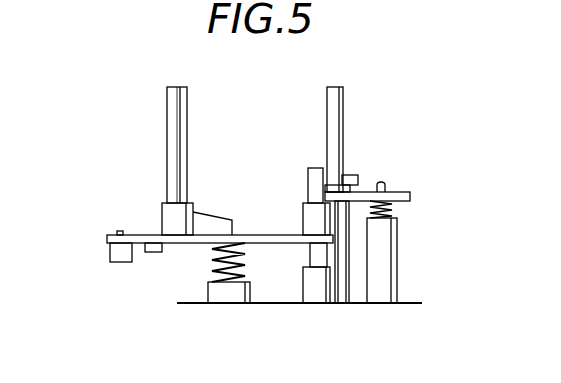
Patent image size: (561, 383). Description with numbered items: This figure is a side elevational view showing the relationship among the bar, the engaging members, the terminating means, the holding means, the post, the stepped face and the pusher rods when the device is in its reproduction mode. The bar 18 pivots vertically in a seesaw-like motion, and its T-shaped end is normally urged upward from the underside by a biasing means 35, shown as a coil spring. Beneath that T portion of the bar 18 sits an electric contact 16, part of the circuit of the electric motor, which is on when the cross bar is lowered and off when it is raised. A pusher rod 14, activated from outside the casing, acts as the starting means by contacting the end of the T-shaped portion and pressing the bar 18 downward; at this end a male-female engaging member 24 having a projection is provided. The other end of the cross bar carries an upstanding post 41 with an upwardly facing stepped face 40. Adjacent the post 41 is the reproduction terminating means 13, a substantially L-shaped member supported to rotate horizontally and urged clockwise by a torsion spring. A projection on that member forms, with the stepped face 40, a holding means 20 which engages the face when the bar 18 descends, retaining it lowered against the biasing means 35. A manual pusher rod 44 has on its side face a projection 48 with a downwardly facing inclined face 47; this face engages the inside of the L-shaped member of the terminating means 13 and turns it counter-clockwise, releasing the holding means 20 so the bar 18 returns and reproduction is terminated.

The reproduction terminating means 13 is at (406, 189).
The pusher rod 14 is at (187, 120).
The electric contact 16 is at (160, 254).
The bar 18 is at (258, 235).
The holding means 20 is at (347, 175).
The male-female engaging member 24 is at (110, 256).
The biasing means 35 is at (252, 272).
The stepped face 40 is at (306, 200).
The upstanding post 41 is at (300, 237).
The manual pusher rod 44 is at (341, 98).
The inclined face 47 is at (352, 191).
The projection 48 is at (348, 187).